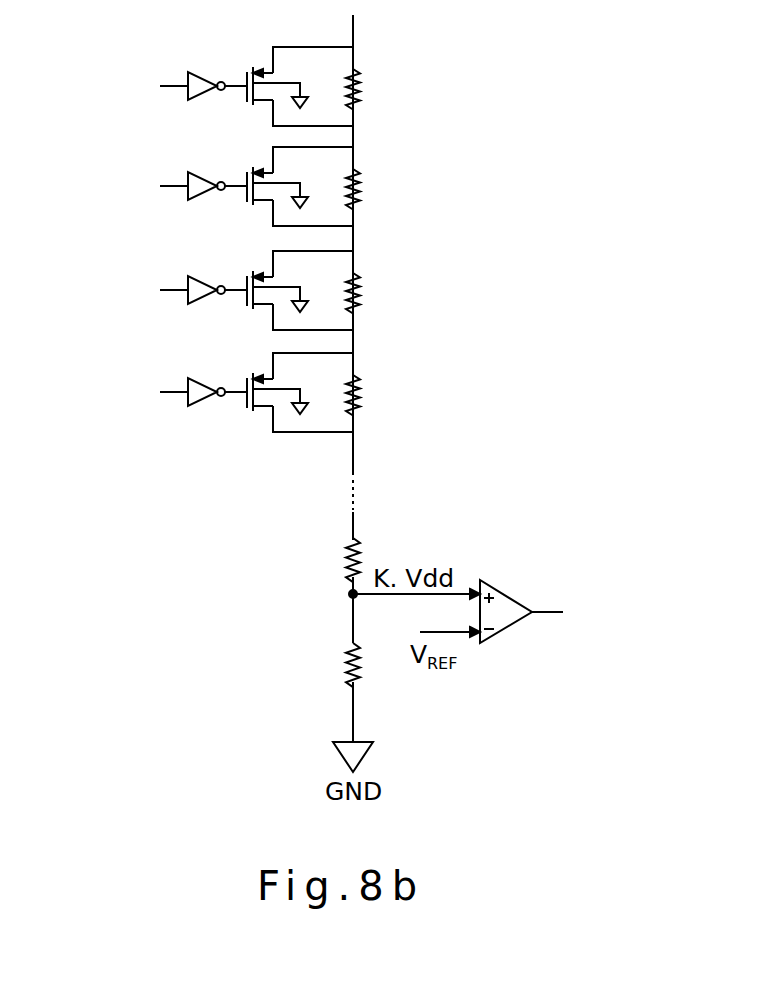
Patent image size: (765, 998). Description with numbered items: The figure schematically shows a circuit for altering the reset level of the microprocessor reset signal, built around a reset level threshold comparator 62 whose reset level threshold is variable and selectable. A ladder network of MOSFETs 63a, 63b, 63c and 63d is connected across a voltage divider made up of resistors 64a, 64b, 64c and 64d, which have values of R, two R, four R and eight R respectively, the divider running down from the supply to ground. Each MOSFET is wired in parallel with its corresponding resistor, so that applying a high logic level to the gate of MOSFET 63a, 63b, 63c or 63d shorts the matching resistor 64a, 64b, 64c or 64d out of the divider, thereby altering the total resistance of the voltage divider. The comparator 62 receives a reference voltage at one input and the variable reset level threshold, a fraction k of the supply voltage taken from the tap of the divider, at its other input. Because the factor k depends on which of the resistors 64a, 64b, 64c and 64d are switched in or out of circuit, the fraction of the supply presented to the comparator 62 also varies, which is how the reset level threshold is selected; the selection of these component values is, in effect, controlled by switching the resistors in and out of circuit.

The reset level threshold comparator 62 is at (507, 627).
The MOSFET 63a is at (243, 80).
The MOSFET 63b is at (243, 180).
The MOSFET 63c is at (243, 284).
The MOSFET 63d is at (243, 386).
The resistor 64a is at (363, 105).
The resistor 64b is at (363, 205).
The resistor 64c is at (363, 309).
The resistor 64d is at (363, 411).